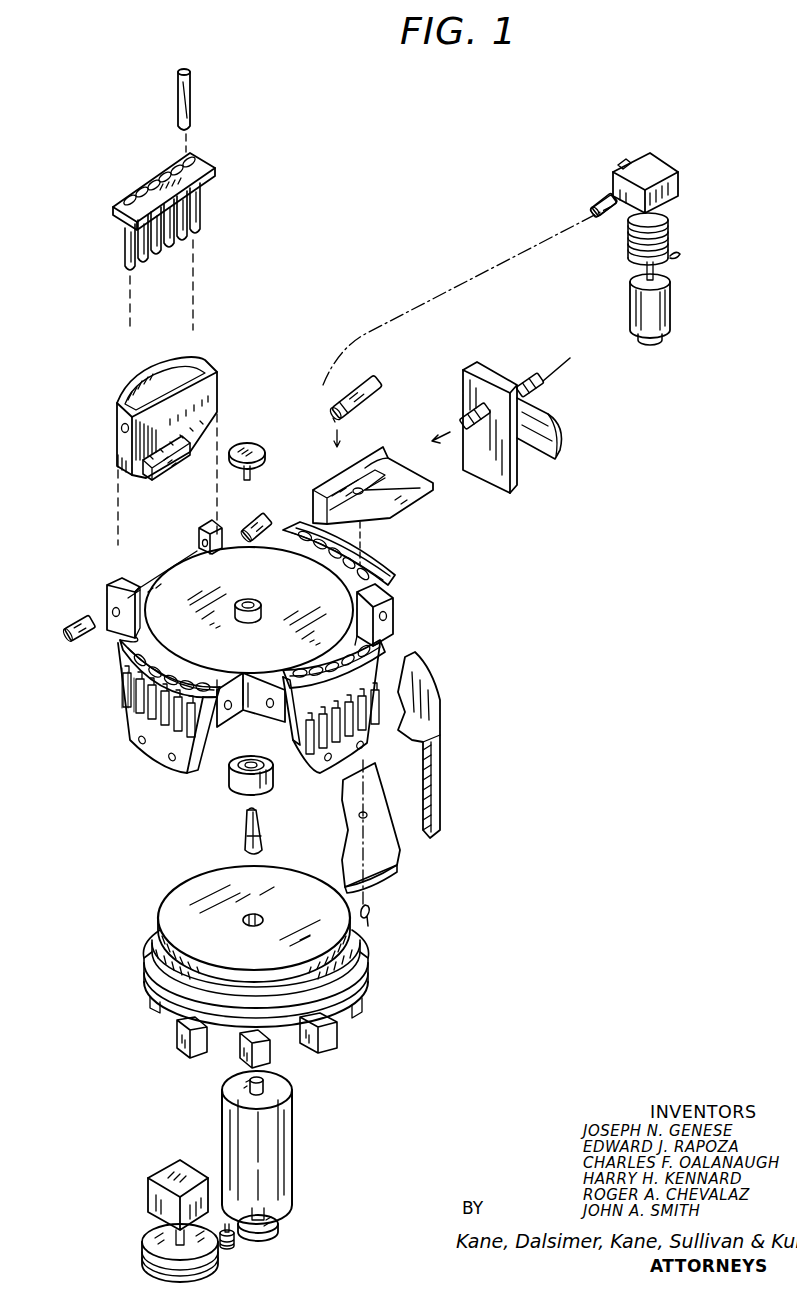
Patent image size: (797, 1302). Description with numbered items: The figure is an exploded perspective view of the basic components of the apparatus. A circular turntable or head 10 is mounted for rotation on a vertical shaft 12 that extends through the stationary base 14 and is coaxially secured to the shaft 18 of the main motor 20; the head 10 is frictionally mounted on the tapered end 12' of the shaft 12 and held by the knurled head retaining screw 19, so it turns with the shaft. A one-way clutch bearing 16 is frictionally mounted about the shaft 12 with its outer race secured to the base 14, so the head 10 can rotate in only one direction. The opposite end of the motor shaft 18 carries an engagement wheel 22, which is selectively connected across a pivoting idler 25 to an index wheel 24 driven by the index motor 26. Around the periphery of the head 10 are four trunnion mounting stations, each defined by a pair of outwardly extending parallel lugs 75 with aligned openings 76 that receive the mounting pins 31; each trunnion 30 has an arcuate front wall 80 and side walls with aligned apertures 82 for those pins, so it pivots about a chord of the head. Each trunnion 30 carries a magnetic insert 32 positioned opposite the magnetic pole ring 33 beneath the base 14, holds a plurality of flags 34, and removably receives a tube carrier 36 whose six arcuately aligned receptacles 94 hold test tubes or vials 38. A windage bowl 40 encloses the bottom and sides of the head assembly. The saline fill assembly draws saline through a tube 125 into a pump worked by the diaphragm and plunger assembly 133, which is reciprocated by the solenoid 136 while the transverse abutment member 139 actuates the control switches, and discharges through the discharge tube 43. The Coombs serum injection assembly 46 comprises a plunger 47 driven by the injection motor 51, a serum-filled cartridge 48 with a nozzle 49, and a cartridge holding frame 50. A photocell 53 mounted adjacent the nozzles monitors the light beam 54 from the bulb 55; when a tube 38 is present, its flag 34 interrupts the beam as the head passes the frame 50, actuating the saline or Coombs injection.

The head 10 is at (255, 634).
The vertical shaft 12 is at (234, 835).
The tapered end 12' is at (275, 819).
The stationary base 14 is at (200, 896).
The one-way clutch bearing 16 is at (240, 784).
The main motor shaft 18 is at (266, 1086).
The knurled head retaining screw 19 is at (259, 450).
The main motor 20 is at (280, 1148).
The engagement wheel 22 is at (280, 1226).
The index wheel 24 is at (150, 1250).
The pivoting idler 25 is at (234, 1248).
The index motor 26 is at (152, 1198).
The trunnion 30 is at (228, 556).
The pin 31 is at (263, 518).
The magnetic insert 32 is at (173, 470).
The magnetic pole ring 33 is at (190, 974).
The flag 34 is at (125, 712).
The tube carrier 36 is at (161, 211).
The test tube 38 is at (191, 92).
The windage bowl 40 is at (441, 800).
The discharge tube 43 is at (510, 260).
The Coombs serum injection assembly 46 is at (518, 472).
The plunger 47 is at (521, 375).
The serum-filled cartridge 48 is at (358, 388).
The nozzle 49 is at (330, 412).
The cartridge holding frame 50 is at (388, 476).
The injection motor 51 is at (546, 416).
The photocell 53 is at (358, 488).
The light beam 54 is at (362, 549).
The bulb 55 is at (372, 913).
The lug 75 is at (107, 590).
The opening 76 is at (391, 610).
The front wall 80 is at (155, 374).
The aperture 82 is at (121, 428).
The receptacle 94 is at (131, 196).
The tube 125 is at (627, 159).
The diaphragm and plunger assembly 133 is at (673, 233).
The solenoid 136 is at (672, 302).
The transverse abutment member 139 is at (683, 256).